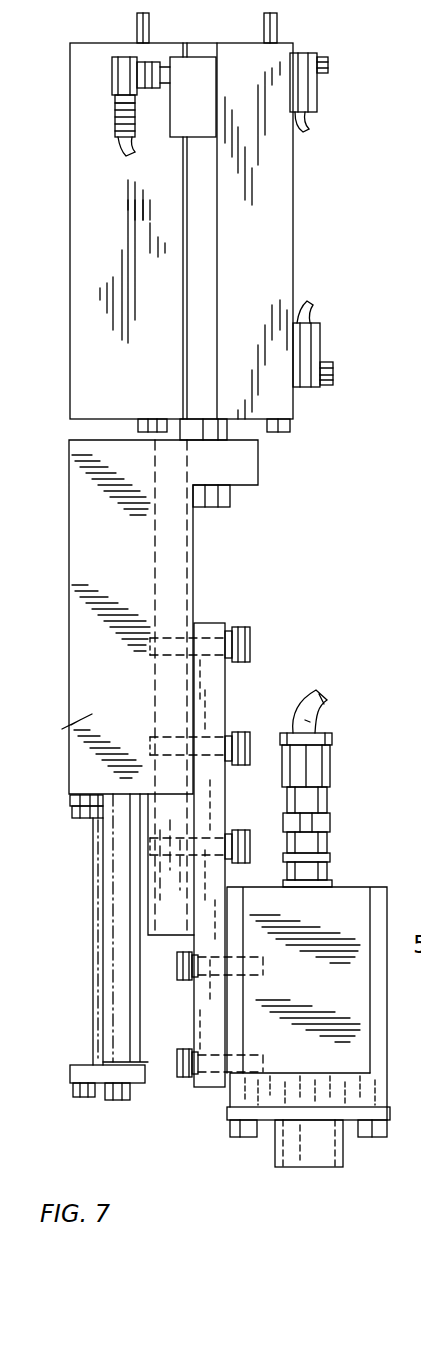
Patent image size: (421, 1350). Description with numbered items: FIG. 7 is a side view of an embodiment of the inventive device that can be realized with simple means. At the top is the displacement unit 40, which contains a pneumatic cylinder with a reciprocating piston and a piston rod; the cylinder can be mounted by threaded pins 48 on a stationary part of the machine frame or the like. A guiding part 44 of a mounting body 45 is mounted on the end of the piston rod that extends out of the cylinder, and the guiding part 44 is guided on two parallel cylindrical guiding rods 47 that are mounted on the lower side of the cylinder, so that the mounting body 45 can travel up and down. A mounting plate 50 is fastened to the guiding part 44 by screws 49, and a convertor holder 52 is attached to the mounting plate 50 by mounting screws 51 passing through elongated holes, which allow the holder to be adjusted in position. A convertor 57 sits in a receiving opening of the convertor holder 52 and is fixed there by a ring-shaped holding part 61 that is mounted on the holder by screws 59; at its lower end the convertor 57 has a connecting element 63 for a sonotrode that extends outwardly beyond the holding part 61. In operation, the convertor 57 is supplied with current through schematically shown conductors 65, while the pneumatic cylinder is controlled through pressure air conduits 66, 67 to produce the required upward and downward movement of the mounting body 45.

The displacement unit 40 is at (293, 263).
The guiding part 44 is at (64, 740).
The mounting body 45 is at (63, 558).
The guiding rods 47 is at (107, 912).
The threaded pins 48 is at (142, 33).
The screws 49 is at (250, 645).
The mounting plate 50 is at (193, 564).
The mounting screws 51 is at (195, 1104).
The convertor holder 52 is at (380, 884).
The convertor 57 is at (362, 1002).
The screws 59 is at (373, 1137).
The ring-shaped holding part 61 is at (288, 1092).
The connecting element 63 is at (302, 1155).
The conductors 65 is at (322, 713).
The pressure air conduit 66 is at (323, 349).
The pressure air conduit 67 is at (318, 93).